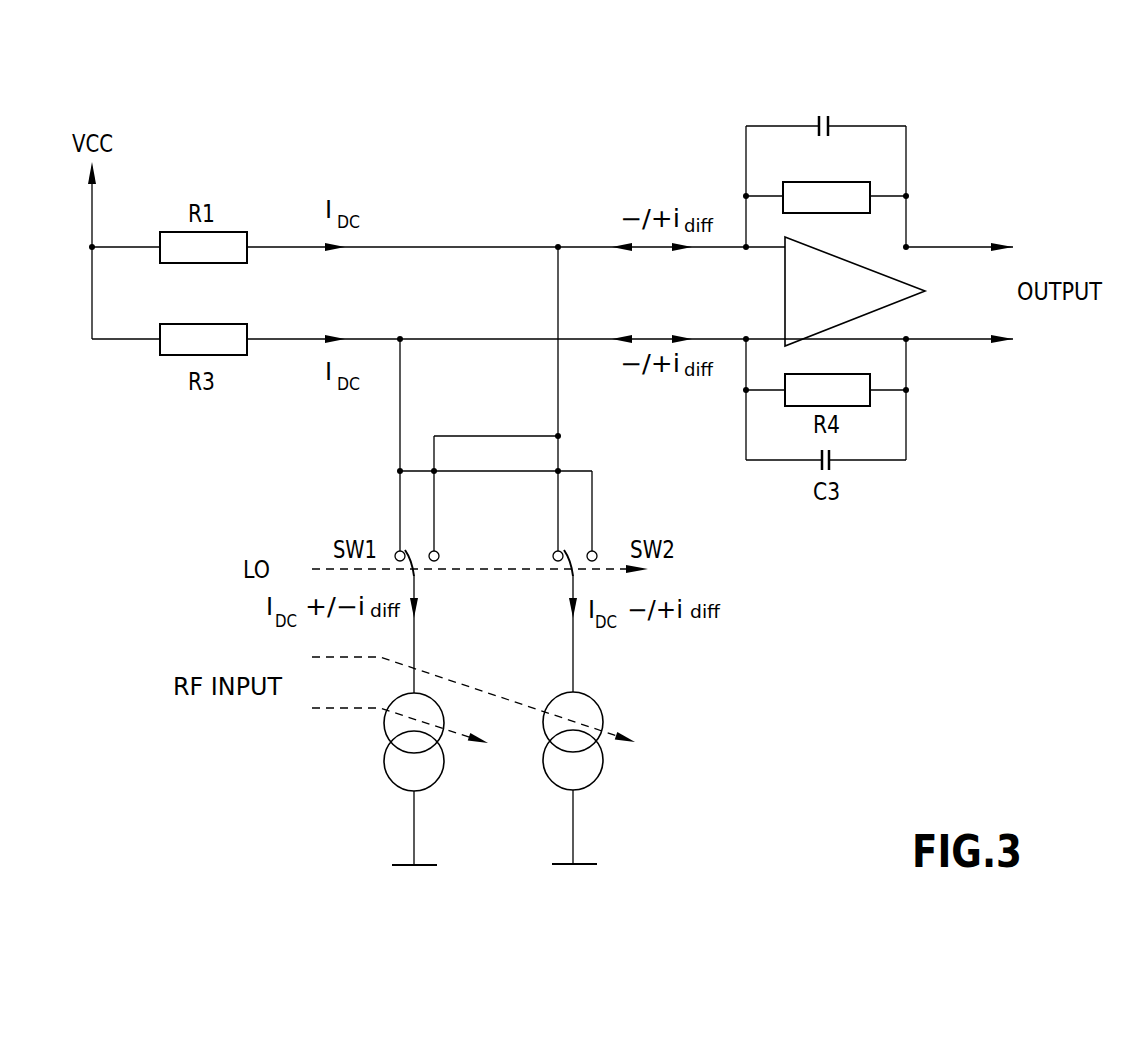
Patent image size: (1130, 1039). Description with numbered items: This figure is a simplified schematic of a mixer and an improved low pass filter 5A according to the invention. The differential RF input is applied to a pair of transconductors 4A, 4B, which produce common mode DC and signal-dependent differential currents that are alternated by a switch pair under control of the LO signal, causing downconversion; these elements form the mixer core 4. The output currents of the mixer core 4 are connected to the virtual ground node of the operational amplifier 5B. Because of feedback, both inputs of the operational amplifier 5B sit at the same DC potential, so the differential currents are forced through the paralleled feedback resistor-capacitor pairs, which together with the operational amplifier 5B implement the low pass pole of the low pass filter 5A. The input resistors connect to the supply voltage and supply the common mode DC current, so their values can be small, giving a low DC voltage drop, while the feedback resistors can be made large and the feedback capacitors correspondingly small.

The low pass filter 5A is at (927, 93).
The operational amplifier 5B is at (903, 284).
The mixer core 4 is at (760, 578).
The transconductor 4A is at (386, 768).
The transconductor 4B is at (604, 765).